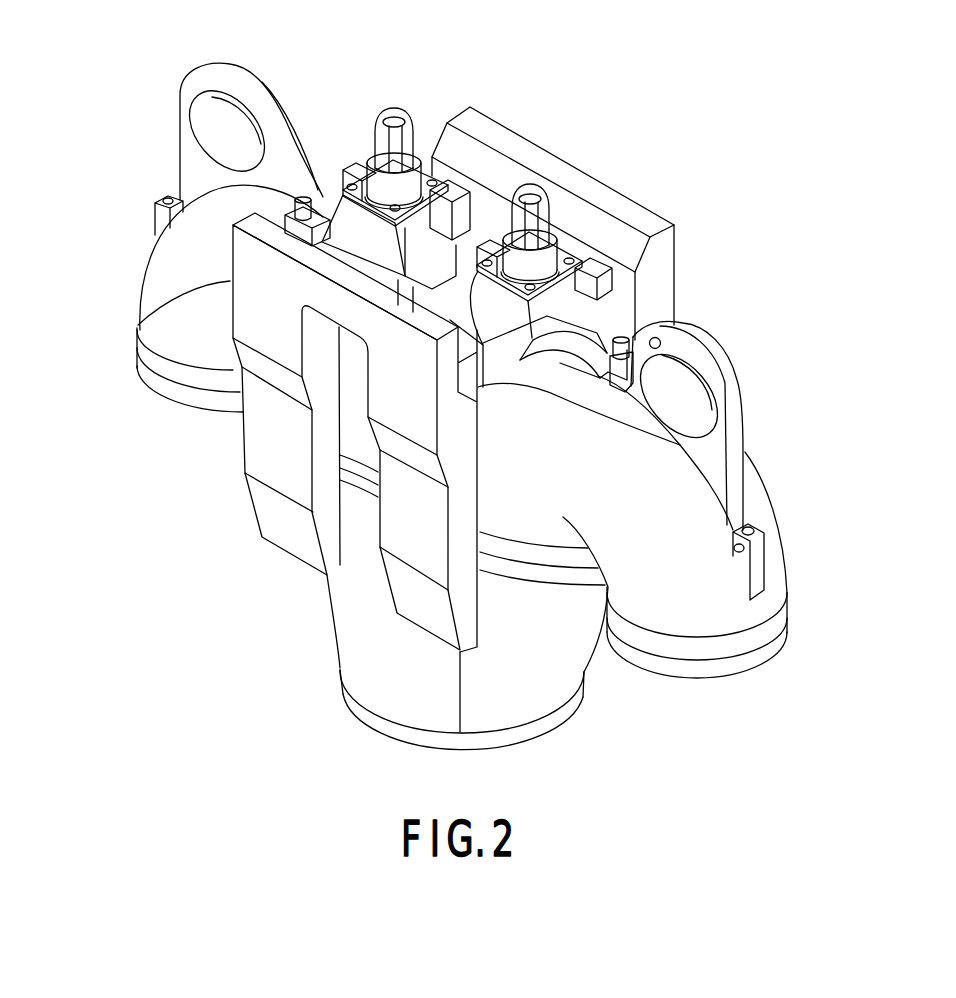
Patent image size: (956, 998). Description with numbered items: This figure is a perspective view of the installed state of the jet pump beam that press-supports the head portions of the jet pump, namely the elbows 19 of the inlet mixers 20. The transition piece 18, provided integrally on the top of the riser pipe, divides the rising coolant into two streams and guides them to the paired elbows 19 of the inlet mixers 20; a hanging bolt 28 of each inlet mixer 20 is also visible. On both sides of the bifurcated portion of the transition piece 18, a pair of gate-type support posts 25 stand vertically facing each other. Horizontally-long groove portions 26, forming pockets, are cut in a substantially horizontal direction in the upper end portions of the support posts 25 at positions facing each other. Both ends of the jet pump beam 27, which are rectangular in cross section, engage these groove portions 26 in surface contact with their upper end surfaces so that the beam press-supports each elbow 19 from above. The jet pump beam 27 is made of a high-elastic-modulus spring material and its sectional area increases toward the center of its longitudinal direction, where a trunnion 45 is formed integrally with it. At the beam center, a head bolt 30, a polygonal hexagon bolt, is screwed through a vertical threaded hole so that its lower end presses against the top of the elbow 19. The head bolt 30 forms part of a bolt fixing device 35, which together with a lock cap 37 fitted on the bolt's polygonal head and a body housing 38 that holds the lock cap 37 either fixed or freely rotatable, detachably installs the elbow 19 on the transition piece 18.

The transition piece 18 is at (318, 610).
The elbow 19 is at (138, 296).
The inlet mixer 20 is at (138, 249).
The support post 25 is at (676, 233).
The groove portion 26 is at (608, 303).
The jet pump beam 27 is at (377, 276).
The hanging bolt 28 is at (243, 78).
The head bolt 30 is at (394, 116).
The bolt fixing device 35 is at (424, 125).
The lock cap 37 is at (425, 180).
The body housing 38 is at (440, 213).
The trunnion 45 is at (362, 168).